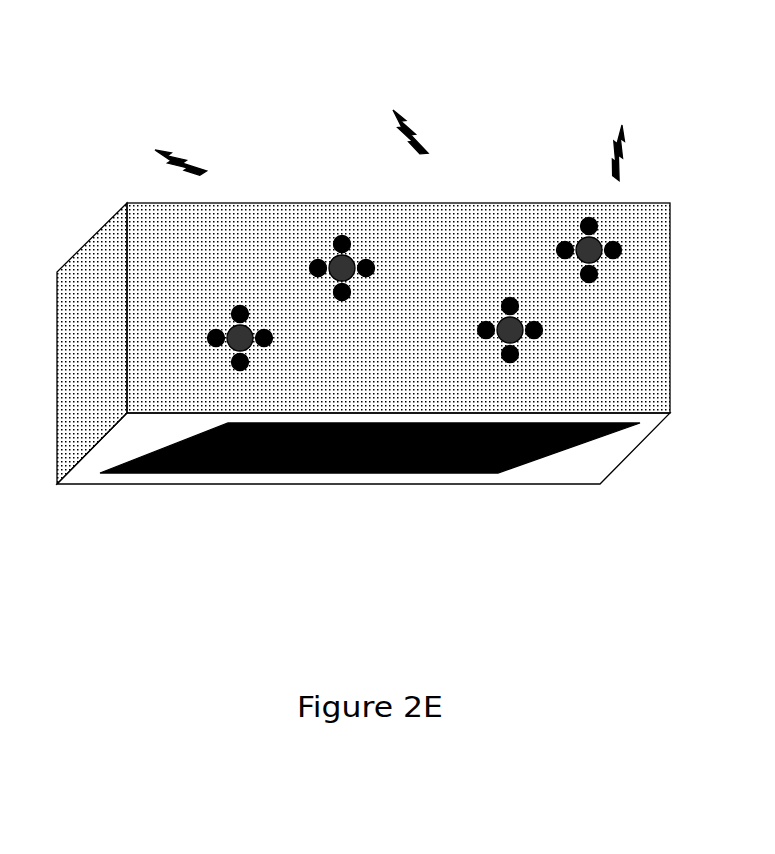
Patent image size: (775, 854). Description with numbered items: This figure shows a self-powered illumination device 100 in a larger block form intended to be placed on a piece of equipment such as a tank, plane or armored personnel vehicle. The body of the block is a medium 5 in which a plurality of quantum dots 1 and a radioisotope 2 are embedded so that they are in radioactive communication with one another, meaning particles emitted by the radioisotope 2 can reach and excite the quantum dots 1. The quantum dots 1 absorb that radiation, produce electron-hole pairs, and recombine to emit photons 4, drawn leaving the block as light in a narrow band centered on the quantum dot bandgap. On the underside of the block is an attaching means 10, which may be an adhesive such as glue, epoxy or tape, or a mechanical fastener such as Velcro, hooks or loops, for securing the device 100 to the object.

The quantum dots 1 is at (205, 338).
The radioisotope 2 is at (335, 262).
The photons 4 is at (157, 165).
The medium 5 is at (630, 340).
The attaching means 10 is at (272, 472).
The illumination device 100 is at (477, 80).